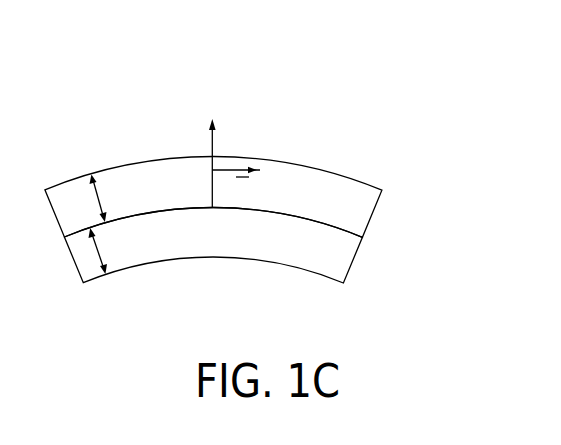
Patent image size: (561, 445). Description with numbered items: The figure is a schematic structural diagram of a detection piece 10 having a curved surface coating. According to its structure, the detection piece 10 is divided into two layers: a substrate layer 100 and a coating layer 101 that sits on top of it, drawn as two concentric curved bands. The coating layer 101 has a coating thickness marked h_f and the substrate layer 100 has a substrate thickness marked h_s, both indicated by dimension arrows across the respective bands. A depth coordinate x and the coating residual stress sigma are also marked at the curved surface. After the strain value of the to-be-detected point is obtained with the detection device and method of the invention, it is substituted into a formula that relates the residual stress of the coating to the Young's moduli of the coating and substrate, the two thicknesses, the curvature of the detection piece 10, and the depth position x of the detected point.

The detection piece 10 is at (271, 154).
The coating layer 101 is at (348, 210).
The substrate layer 100 is at (337, 255).